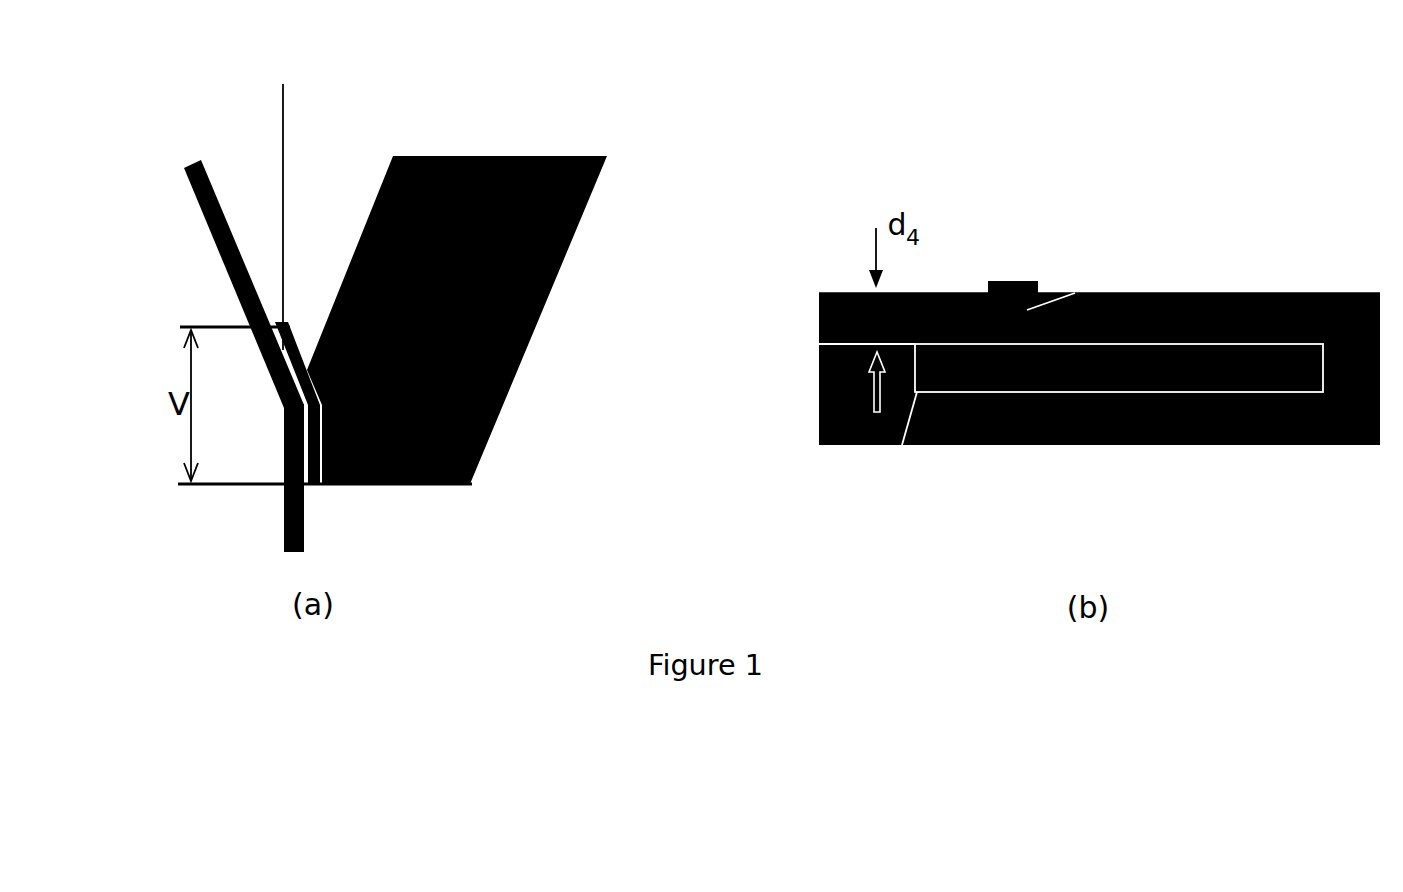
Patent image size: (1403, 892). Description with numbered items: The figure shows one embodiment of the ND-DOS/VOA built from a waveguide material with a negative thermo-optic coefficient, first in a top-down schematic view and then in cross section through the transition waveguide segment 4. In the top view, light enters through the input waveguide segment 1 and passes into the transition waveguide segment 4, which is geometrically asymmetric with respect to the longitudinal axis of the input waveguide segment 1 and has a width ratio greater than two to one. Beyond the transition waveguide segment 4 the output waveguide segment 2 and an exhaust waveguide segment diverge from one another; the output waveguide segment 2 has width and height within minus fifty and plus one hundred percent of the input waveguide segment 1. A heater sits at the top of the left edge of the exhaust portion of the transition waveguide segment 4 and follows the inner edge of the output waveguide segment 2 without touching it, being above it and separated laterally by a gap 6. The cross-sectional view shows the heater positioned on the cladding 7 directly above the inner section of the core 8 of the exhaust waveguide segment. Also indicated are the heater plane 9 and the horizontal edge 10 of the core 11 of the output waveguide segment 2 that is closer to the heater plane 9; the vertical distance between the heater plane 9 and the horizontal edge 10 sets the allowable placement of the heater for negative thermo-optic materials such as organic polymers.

The input waveguide segment 1 is at (287, 518).
The output waveguide segment 2 is at (213, 230).
The transition waveguide segment 4 is at (305, 422).
The gap 6 is at (292, 201).
The cladding 7 is at (1075, 293).
The core 8 is at (1132, 367).
The heater plane 9 is at (819, 293).
The horizontal edge 10 is at (819, 344).
The core 11 is at (902, 445).